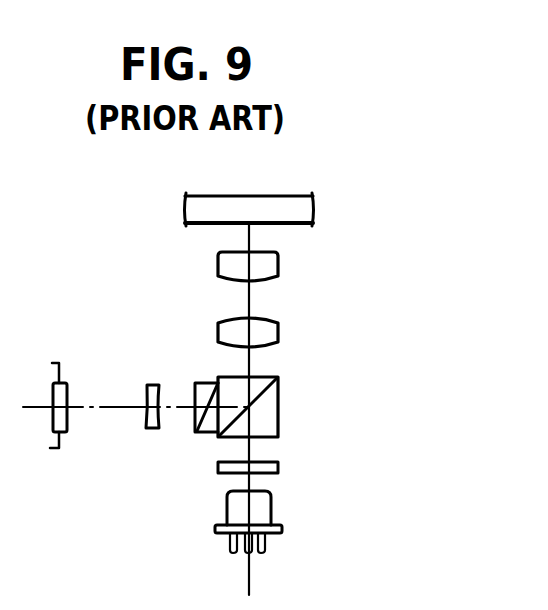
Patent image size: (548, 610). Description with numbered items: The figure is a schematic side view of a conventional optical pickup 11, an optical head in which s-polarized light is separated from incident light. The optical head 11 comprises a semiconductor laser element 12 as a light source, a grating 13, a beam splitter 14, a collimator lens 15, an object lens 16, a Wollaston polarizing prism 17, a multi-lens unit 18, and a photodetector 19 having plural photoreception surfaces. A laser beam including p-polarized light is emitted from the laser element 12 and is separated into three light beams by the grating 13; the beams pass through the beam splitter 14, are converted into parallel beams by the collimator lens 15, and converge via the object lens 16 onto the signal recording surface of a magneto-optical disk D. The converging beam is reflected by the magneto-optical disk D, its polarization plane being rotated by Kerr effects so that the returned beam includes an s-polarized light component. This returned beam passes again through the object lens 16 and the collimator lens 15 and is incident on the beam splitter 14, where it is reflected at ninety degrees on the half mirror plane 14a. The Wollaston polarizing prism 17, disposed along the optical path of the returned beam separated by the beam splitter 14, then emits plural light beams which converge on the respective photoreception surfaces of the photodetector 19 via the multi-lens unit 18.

The optical pickup 11 is at (367, 191).
The magneto-optical disk D is at (281, 196).
The semiconductor laser element 12 is at (272, 507).
The grating 13 is at (279, 468).
The beam splitter 14 is at (280, 416).
The half mirror plane 14a is at (279, 378).
The collimator lens 15 is at (280, 334).
The object lens 16 is at (280, 266).
The Wollaston polarizing prism 17 is at (201, 432).
The multi-lens unit 18 is at (152, 385).
The photodetector 19 is at (67, 420).